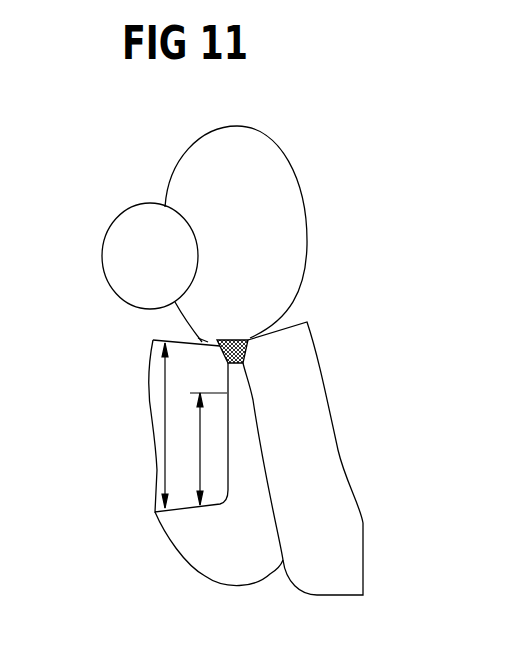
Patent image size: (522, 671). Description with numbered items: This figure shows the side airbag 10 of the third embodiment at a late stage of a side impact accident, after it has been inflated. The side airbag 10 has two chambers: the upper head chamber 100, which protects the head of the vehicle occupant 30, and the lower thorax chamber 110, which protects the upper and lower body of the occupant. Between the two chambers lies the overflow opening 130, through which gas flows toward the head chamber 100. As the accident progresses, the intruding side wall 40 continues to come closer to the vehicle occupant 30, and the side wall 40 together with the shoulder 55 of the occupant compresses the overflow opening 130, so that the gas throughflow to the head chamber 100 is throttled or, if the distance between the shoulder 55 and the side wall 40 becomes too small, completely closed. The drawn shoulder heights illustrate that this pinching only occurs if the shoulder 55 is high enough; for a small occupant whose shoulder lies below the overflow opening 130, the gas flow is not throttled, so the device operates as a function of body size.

The side airbag 10 is at (293, 157).
The head chamber 100 is at (287, 250).
The vehicle occupant 30 is at (110, 268).
The shoulder 55 is at (203, 343).
The overflow opening 130 is at (238, 339).
The side wall 40 is at (313, 392).
The thorax chamber 110 is at (217, 552).